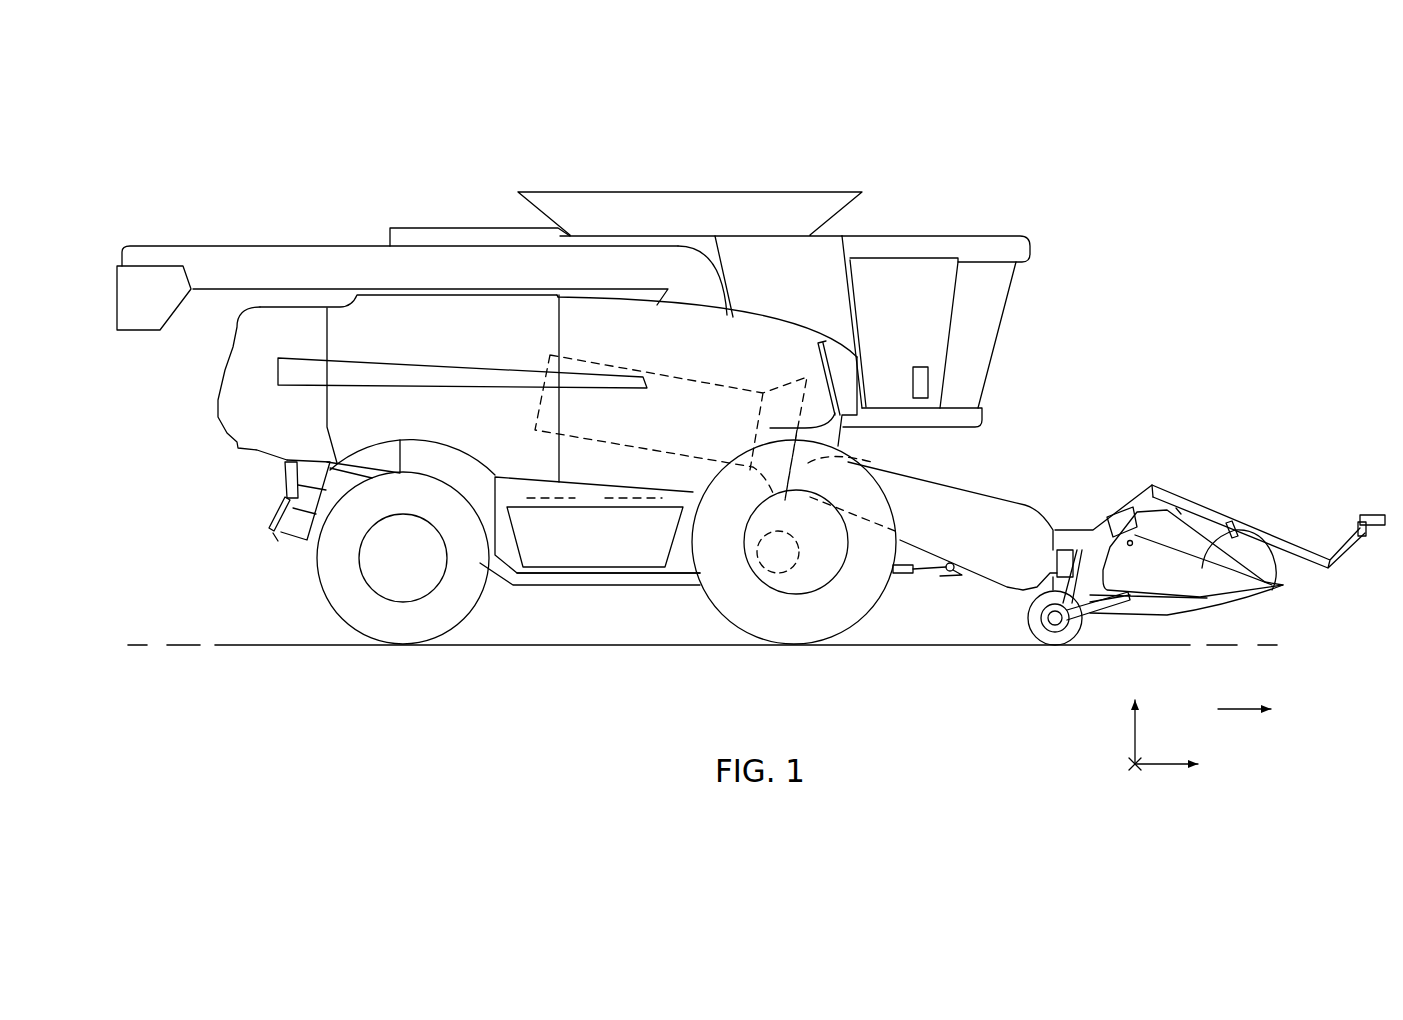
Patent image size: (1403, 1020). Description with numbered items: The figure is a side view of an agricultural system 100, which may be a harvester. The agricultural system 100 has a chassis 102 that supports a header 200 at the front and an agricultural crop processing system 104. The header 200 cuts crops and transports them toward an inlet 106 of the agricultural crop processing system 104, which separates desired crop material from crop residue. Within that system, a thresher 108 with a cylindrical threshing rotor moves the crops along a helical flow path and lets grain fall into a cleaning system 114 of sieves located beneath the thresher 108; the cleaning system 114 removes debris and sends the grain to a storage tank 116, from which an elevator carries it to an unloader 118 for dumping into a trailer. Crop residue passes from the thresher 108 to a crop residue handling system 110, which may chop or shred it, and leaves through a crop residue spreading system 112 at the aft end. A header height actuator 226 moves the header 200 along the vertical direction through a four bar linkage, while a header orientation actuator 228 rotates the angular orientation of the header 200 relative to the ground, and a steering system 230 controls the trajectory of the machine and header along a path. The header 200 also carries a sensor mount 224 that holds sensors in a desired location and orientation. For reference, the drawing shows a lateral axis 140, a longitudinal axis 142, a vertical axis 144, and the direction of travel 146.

The agricultural system 100 is at (1031, 151).
The chassis 102 is at (541, 589).
The agricultural crop processing system 104 is at (669, 356).
The inlet 106 is at (869, 461).
The thresher 108 is at (686, 378).
The crop residue handling system 110 is at (377, 354).
The crop residue spreading system 112 is at (267, 511).
The cleaning system 114 is at (589, 501).
The storage tank 116 is at (618, 568).
The unloader 118 is at (228, 243).
The header 200 is at (1206, 549).
The sensor mount 224 is at (1338, 579).
The header height actuator 226 is at (931, 578).
The header orientation actuator 228 is at (1069, 548).
The steering system 230 is at (917, 367).
The lateral axis 140 is at (1130, 764).
The longitudinal axis 142 is at (1160, 766).
The vertical axis 144 is at (1132, 737).
The direction of travel 146 is at (1240, 710).